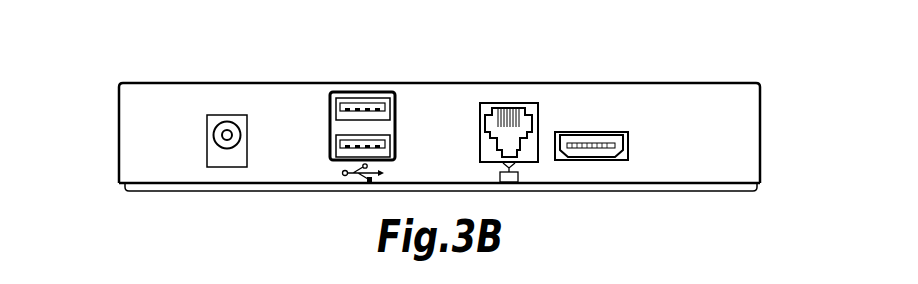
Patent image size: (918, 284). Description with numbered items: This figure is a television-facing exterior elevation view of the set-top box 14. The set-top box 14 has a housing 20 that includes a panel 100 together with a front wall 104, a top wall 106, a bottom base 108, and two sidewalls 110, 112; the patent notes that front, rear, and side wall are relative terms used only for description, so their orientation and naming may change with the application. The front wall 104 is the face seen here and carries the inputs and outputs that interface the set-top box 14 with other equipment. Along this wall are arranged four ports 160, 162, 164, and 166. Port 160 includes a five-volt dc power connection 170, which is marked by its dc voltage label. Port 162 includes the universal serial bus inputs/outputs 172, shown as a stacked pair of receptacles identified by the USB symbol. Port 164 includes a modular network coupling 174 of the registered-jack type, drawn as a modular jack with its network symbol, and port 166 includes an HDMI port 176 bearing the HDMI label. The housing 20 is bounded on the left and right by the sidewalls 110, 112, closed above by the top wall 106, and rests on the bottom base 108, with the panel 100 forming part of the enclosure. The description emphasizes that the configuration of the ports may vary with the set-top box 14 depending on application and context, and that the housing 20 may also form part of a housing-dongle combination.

The set-top box 14 is at (143, 66).
The panel 100 is at (734, 75).
The top wall 106 is at (192, 82).
The sidewall 110 is at (119, 134).
The sidewall 112 is at (760, 133).
The front wall 104 is at (171, 175).
The bottom base 108 is at (283, 193).
The housing 20 is at (132, 193).
The port 160 is at (239, 117).
The 5V dc power connection 170 is at (225, 162).
The port 162 is at (362, 92).
The USB inputs/outputs 172 is at (343, 158).
The port 164 is at (512, 107).
The RJ-45 coupling 174 is at (527, 154).
The port 166 is at (590, 133).
The HDMI port 176 is at (621, 159).